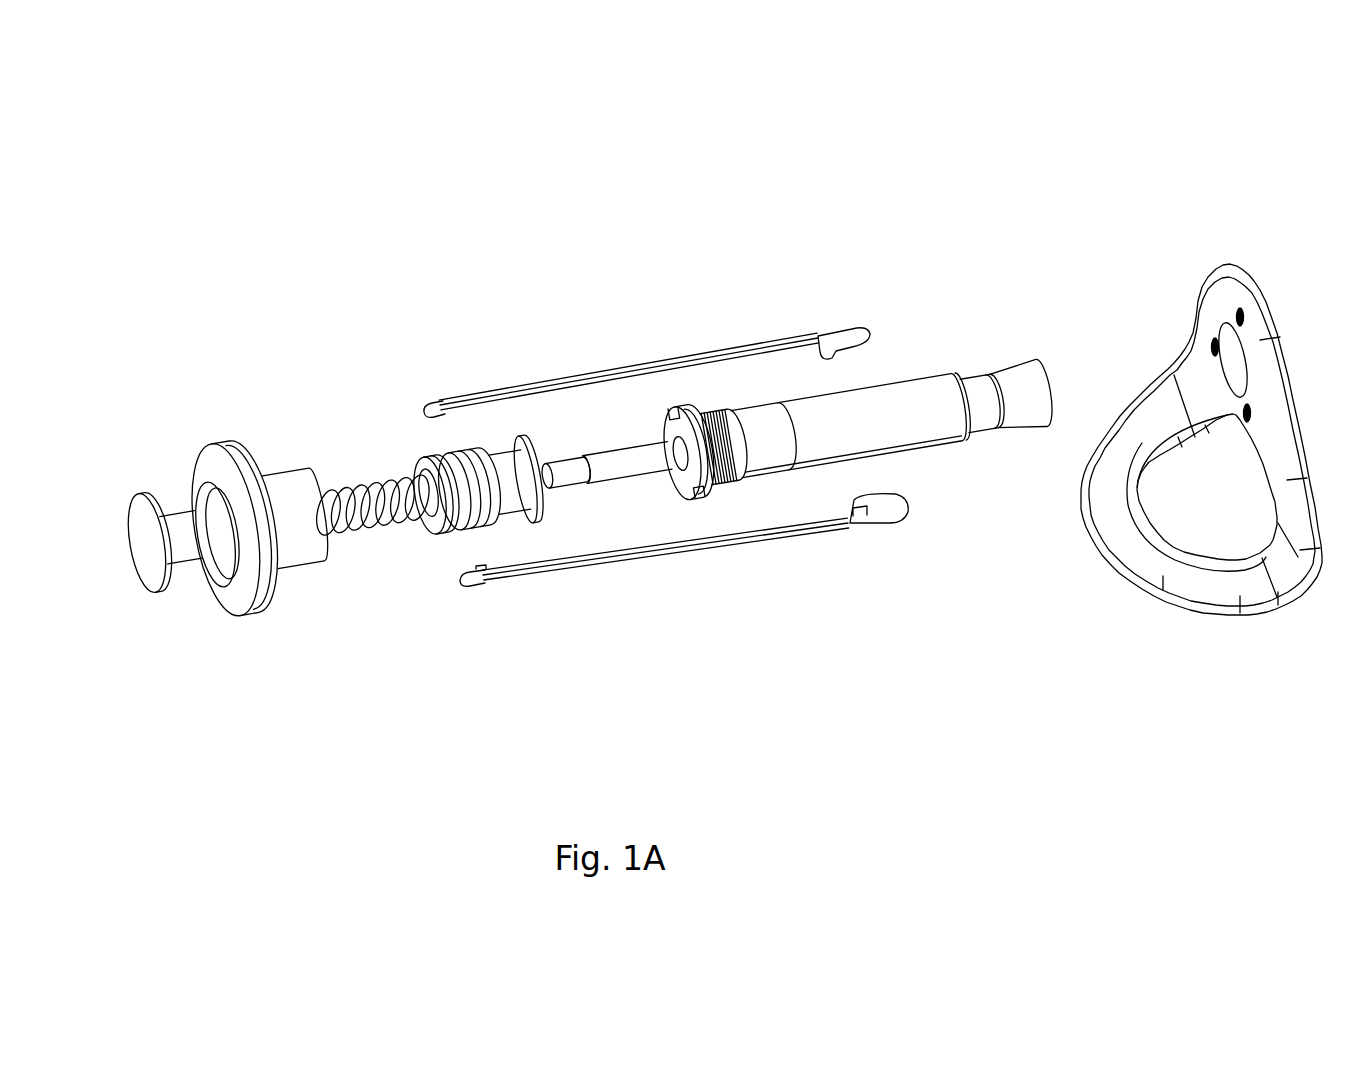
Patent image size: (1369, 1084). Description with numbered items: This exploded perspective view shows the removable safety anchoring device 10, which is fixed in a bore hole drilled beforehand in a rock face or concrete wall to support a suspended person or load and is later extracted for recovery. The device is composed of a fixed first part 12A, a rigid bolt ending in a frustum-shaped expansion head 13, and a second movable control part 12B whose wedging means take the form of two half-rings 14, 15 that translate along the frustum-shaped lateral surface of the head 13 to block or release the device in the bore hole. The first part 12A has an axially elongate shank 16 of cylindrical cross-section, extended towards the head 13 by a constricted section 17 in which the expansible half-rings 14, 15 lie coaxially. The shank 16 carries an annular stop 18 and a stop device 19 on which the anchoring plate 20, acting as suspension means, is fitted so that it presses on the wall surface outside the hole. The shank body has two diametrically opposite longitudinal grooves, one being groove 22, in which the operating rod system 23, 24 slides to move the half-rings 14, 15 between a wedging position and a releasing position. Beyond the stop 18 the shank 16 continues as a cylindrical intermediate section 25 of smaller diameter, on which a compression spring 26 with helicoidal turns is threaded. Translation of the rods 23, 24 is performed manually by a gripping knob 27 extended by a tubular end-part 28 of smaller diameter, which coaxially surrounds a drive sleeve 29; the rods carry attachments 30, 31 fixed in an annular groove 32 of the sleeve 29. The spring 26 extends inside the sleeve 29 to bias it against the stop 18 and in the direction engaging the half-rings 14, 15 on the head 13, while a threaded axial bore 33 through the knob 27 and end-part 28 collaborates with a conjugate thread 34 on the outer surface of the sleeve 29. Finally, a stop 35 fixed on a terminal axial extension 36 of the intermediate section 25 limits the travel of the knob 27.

The removable safety anchoring device 10 is at (432, 767).
The fixed first part 12A is at (890, 467).
The second movable control part 12B is at (627, 318).
The frustum-shaped expansion head 13 is at (1020, 386).
The half-ring 14 is at (843, 333).
The half-ring 15 is at (886, 514).
The shank 16 is at (865, 463).
The constricted section 17 is at (980, 408).
The annular stop 18 is at (703, 467).
The stop device 19 is at (725, 462).
The anchoring plate 20 is at (1243, 275).
The longitudinal groove 22 is at (849, 458).
The operating rod 23 is at (643, 364).
The operating rod 24 is at (623, 555).
The cylindrical intermediate section 25 is at (618, 466).
The compression spring 26 is at (375, 535).
The gripping knob 27 is at (210, 463).
The tubular end-part 28 is at (293, 492).
The drive sleeve 29 is at (450, 535).
The attachment 30 is at (428, 403).
The attachment 31 is at (477, 586).
The annular groove 32 is at (421, 458).
The threaded axial bore 33 is at (223, 547).
The conjugate thread 34 is at (451, 452).
The stop 35 is at (135, 525).
The terminal axial extension 36 is at (566, 472).